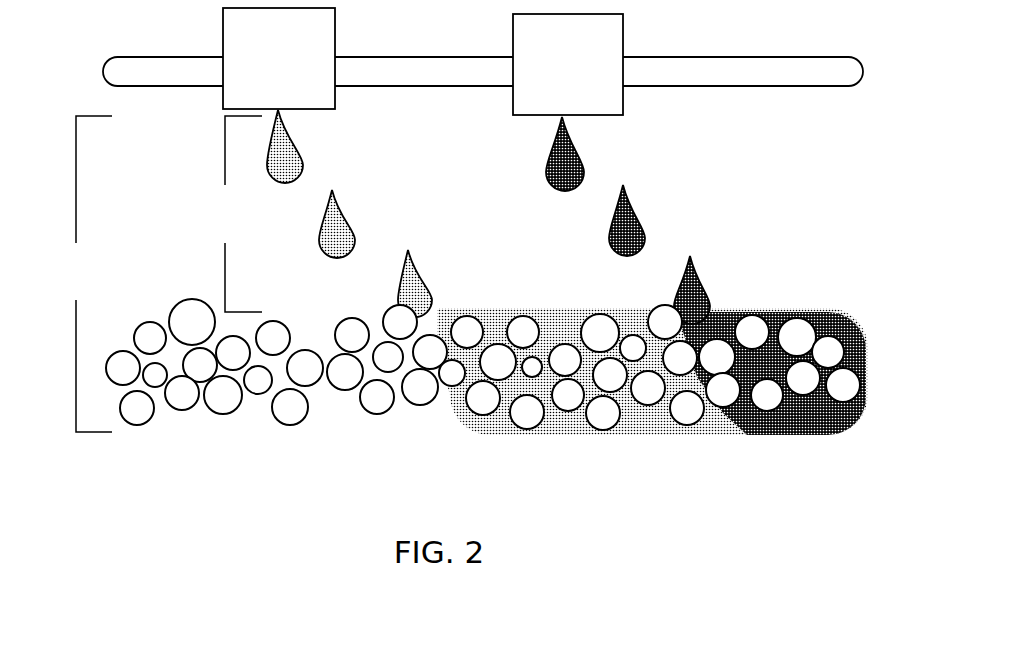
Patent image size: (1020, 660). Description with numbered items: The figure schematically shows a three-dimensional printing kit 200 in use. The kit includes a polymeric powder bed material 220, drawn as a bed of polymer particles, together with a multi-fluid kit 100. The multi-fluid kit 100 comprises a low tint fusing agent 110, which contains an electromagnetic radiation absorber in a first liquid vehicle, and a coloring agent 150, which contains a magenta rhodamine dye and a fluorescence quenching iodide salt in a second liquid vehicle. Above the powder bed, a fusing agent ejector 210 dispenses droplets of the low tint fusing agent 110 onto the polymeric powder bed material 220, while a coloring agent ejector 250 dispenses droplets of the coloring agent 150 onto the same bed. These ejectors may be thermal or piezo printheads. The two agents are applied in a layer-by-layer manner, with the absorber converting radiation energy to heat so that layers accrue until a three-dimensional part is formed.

The multi-fluid kit 100 is at (202, 224).
The low tint fusing agent 110 is at (374, 209).
The coloring agent 150 is at (664, 199).
The three-dimensional printing kit 200 is at (54, 287).
The fusing agent ejector 210 is at (302, 75).
The polymeric powder bed material 220 is at (290, 406).
The coloring agent ejector 250 is at (590, 76).